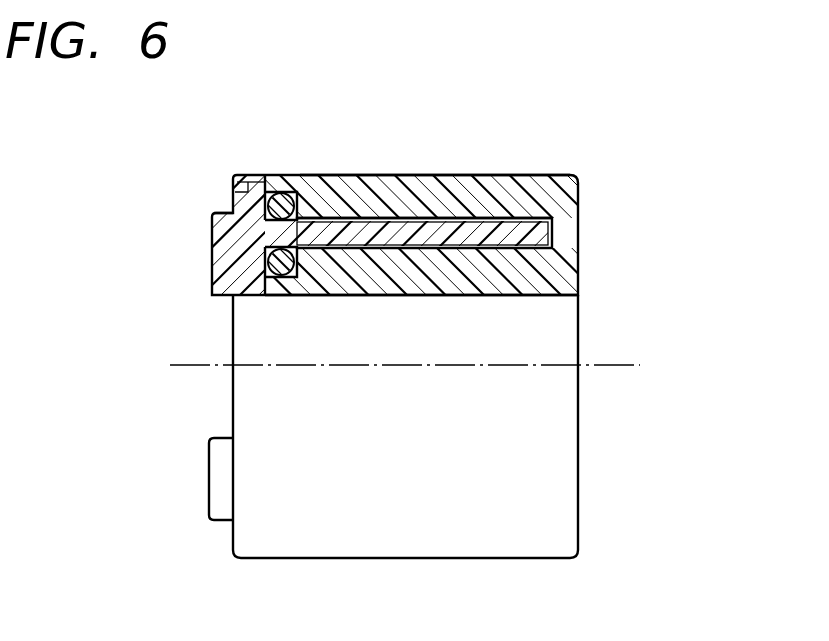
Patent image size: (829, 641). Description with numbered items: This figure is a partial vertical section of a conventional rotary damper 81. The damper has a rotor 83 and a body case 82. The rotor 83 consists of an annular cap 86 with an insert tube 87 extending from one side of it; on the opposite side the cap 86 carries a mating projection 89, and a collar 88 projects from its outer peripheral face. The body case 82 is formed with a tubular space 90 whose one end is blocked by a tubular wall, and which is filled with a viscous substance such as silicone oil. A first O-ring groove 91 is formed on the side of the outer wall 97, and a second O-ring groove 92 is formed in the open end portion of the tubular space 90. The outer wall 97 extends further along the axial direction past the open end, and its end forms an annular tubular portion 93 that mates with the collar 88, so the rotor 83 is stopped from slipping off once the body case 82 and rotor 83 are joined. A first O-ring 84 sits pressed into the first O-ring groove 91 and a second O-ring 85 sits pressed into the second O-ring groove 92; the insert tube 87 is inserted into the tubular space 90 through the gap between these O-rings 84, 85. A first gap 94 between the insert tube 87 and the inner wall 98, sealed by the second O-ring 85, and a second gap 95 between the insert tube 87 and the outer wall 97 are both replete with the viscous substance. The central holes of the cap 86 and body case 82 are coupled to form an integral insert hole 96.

The conventional rotary damper 81 is at (622, 160).
The body case 82 is at (592, 211).
The rotor 83 is at (193, 265).
The first O-ring 84 is at (278, 198).
The second O-ring 85 is at (277, 278).
The annular cap 86 is at (233, 200).
The insert tube 87 is at (470, 235).
The collar 88 is at (243, 173).
The mating projection 89 is at (212, 218).
The tubular space 90 is at (568, 238).
The first O-ring groove 91 is at (303, 200).
The second O-ring groove 92 is at (316, 262).
The annular tubular portion 93 is at (237, 177).
The first gap 94 is at (432, 255).
The second gap 95 is at (432, 212).
The integral insert hole 96 is at (576, 335).
The outer wall 97 is at (515, 178).
The inner wall 98 is at (497, 268).